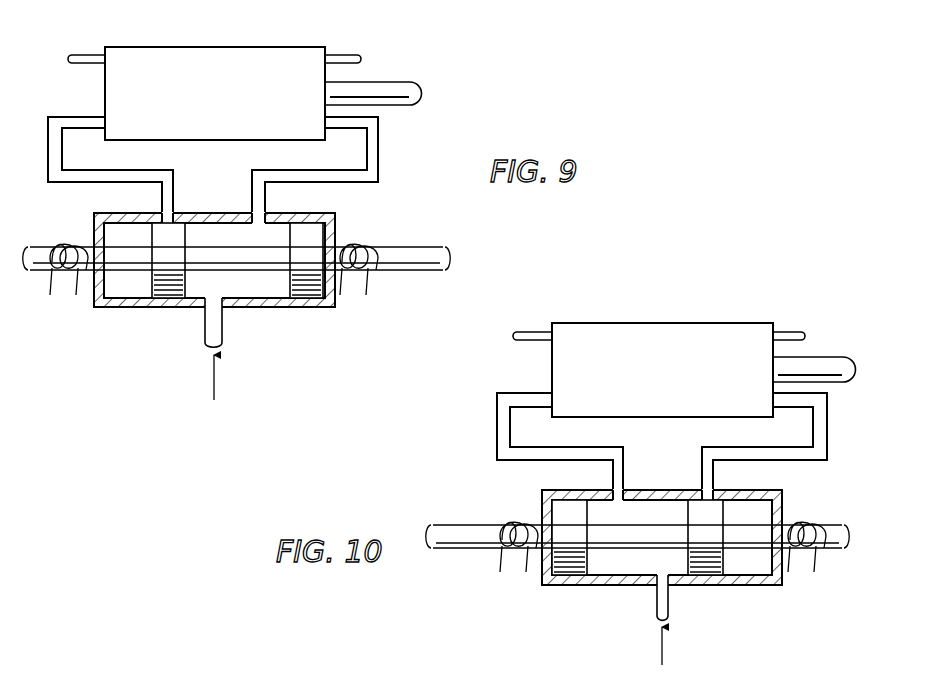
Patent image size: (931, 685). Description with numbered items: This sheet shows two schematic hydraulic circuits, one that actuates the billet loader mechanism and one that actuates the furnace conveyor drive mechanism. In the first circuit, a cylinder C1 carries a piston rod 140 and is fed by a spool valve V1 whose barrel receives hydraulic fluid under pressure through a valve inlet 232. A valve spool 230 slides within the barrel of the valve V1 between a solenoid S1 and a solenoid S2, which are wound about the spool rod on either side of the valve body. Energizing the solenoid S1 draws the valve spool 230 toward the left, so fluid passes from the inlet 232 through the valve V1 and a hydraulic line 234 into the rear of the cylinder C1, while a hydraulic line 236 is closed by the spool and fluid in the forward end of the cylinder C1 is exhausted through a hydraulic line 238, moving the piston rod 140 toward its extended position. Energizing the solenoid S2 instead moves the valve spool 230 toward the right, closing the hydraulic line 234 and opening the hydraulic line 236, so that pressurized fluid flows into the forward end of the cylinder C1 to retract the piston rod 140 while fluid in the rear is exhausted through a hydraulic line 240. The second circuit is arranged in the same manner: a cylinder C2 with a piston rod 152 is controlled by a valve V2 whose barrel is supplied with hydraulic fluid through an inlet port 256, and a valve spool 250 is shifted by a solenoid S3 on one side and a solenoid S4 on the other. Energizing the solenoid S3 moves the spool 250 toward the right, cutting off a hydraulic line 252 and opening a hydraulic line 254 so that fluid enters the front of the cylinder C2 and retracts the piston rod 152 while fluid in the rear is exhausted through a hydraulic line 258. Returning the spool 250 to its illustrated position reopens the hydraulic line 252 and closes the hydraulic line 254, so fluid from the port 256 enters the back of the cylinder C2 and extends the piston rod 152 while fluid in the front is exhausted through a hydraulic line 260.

In FIG. 9, the cylinder C1 is at (218, 77).
In FIG. 9, the hydraulic line 240 is at (89, 55).
In FIG. 9, the hydraulic line 238 is at (345, 55).
In FIG. 9, the piston rod 140 is at (386, 83).
In FIG. 9, the hydraulic line 234 is at (173, 178).
In FIG. 9, the hydraulic line 236 is at (362, 178).
In FIG. 9, the valve V1 is at (309, 308).
In FIG. 9, the valve spool 230 is at (155, 300).
In FIG. 9, the valve inlet 232 is at (223, 332).
In FIG. 9, the solenoid S1 is at (236, 254).
In FIG. 9, the solenoid S2 is at (372, 254).
In FIG. 10, the cylinder C2 is at (672, 355).
In FIG. 10, the hydraulic line 258 is at (531, 332).
In FIG. 10, the hydraulic line 260 is at (786, 332).
In FIG. 10, the piston rod 152 is at (818, 360).
In FIG. 10, the hydraulic line 252 is at (497, 454).
In FIG. 10, the hydraulic line 254 is at (702, 451).
In FIG. 10, the valve V2 is at (745, 586).
In FIG. 10, the valve spool 250 is at (571, 577).
In FIG. 10, the inlet port 256 is at (657, 606).
In FIG. 10, the solenoid S3 is at (807, 526).
In FIG. 10, the solenoid S4 is at (637, 534).